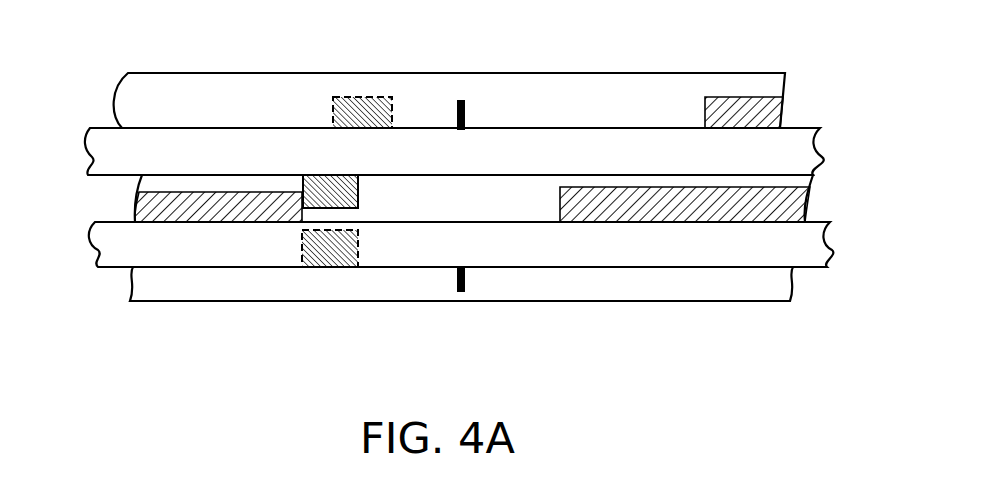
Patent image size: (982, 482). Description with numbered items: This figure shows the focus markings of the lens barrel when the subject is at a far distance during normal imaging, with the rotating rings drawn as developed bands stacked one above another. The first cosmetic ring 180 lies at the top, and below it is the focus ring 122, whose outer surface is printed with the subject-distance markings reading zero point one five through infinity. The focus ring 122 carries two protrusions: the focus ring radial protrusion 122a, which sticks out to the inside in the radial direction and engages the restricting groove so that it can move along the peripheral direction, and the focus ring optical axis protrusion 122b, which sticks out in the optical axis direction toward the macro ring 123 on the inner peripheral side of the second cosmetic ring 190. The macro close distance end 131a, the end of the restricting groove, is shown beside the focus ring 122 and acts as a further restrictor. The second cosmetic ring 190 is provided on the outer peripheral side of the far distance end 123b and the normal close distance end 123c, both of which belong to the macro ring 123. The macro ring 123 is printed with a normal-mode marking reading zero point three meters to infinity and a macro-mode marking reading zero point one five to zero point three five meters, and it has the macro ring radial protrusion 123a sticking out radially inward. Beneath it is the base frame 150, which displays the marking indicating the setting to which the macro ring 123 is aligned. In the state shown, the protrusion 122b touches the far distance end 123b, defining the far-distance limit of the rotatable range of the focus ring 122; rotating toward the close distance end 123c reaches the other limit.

The first cosmetic ring 180 is at (147, 103).
The focus ring 122 is at (790, 143).
The focus ring radial protrusion 122a is at (388, 100).
The focus ring optical axis protrusion 122b is at (320, 185).
The macro close distance end 131a is at (780, 100).
The second cosmetic ring 190 is at (498, 198).
The macro ring 123 is at (802, 247).
The macro ring radial protrusion 123a is at (300, 257).
The far distance end 123b is at (160, 213).
The normal close distance end 123c is at (802, 192).
The base frame 150 is at (773, 285).